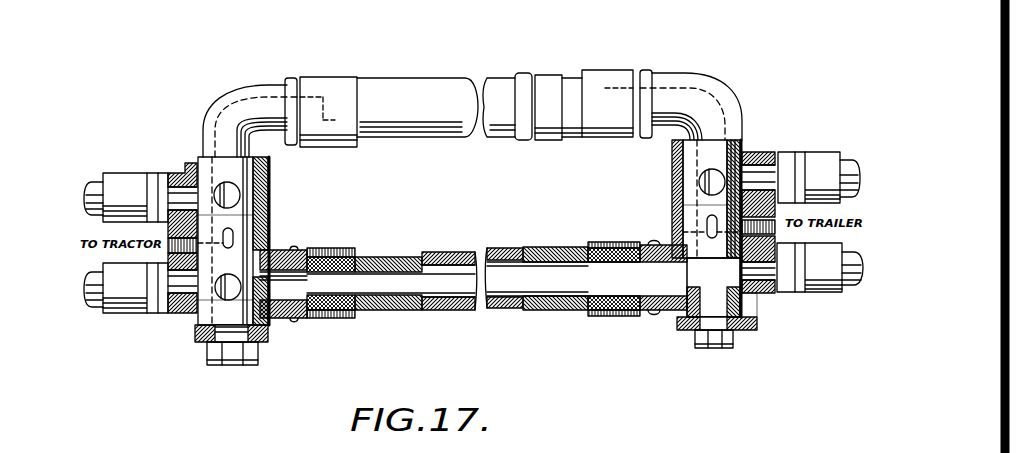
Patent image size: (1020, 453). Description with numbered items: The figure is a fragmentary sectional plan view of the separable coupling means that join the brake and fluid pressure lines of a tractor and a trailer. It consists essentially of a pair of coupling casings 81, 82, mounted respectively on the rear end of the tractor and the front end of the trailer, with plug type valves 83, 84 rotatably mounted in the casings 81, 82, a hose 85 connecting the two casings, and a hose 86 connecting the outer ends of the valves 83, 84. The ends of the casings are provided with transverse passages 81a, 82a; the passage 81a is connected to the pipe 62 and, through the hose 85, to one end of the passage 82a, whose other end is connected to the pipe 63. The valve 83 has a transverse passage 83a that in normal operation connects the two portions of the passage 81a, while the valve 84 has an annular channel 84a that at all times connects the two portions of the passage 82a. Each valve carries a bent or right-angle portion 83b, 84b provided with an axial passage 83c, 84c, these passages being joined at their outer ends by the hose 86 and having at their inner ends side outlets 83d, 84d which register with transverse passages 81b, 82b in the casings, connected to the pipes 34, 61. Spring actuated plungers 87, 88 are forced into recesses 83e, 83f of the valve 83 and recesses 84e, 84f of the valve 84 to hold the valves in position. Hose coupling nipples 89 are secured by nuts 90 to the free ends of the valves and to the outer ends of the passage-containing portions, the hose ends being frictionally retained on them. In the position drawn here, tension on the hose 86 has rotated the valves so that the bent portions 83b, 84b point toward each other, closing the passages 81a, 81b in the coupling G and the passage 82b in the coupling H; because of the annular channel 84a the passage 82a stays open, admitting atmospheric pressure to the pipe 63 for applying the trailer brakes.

The pipe 34 is at (95, 184).
The transverse passage 81b is at (177, 172).
The coupling casing 81 is at (183, 310).
The transverse passage 81a is at (280, 291).
The pipe 62 is at (93, 307).
The plug type valve 83 is at (218, 312).
The coupling G is at (213, 308).
The transverse passage 83a is at (231, 292).
The bent or right-angle portion 83b is at (242, 98).
The axial passage 83c is at (227, 112).
The side outlet 83d is at (232, 192).
The recess 83e is at (235, 238).
The recess 83f is at (185, 245).
The spring actuated plunger 87 is at (237, 217).
The nut 90 is at (328, 82).
The hose coupling nipple 89 is at (357, 90).
The hose 86 is at (437, 128).
The hose 85 is at (500, 311).
The transverse passage 82a is at (658, 280).
The plug type valve 84 is at (713, 300).
The annular channel 84a is at (677, 313).
The bent or right-angle portion 84b is at (693, 100).
The axial passage 84c is at (680, 83).
The side outlet 84d is at (710, 177).
The recess 84e is at (712, 220).
The recess 84f is at (683, 232).
The spring actuated plunger 88 is at (710, 207).
The coupling H is at (748, 330).
The transverse passage 82b is at (772, 157).
The coupling casing 82 is at (760, 293).
The pipe 61 is at (845, 163).
The pipe 63 is at (847, 283).